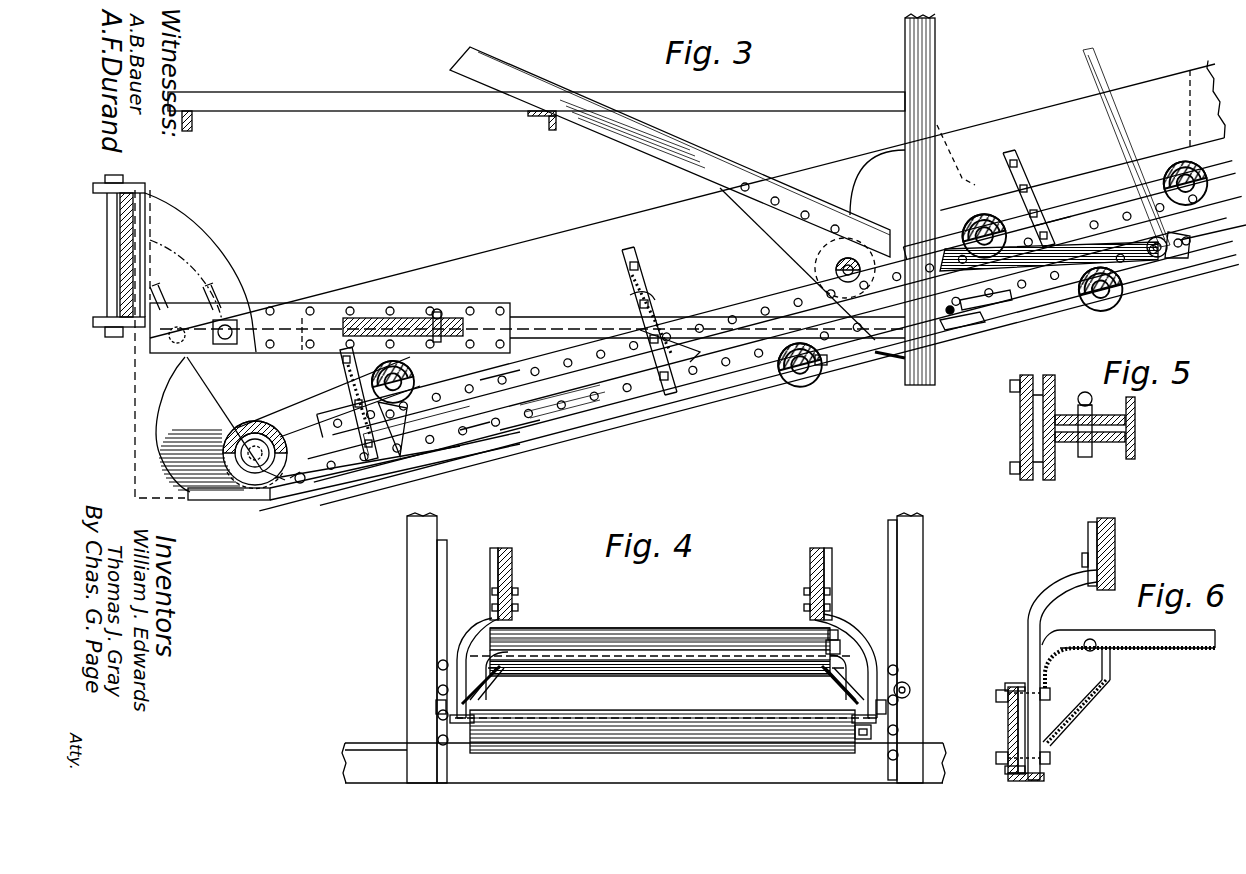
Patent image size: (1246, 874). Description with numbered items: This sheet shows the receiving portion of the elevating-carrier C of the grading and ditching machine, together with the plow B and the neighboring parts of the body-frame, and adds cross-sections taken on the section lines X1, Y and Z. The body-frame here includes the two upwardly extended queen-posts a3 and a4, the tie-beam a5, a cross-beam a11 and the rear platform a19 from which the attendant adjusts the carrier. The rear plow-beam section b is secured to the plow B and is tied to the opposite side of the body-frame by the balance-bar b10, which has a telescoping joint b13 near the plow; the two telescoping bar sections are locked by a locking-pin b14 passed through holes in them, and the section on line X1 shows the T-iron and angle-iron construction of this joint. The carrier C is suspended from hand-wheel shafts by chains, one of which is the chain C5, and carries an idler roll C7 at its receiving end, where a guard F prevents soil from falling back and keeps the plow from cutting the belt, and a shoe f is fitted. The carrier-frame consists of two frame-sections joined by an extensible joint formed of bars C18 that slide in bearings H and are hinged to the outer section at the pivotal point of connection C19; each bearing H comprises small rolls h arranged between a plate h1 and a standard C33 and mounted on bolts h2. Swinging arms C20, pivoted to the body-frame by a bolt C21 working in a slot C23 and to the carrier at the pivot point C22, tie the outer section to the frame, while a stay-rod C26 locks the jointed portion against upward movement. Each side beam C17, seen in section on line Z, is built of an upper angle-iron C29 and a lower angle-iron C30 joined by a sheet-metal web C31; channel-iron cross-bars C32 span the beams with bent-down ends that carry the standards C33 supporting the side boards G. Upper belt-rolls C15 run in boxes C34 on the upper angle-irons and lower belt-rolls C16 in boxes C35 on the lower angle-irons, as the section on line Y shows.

In FIG. 4, the queen-post a3 is at (412, 590).
In FIG. 3, the queen-post a4 is at (937, 88).
In FIG. 4, the queen-post a4 is at (910, 552).
In FIG. 4, the tie-beam a5 is at (757, 760).
In FIG. 3, the cross-beam a11 is at (670, 193).
In FIG. 3, the platform a19 is at (812, 108).
In FIG. 3, the rear plow-beam section b is at (132, 248).
In FIG. 3, the balance-bar b10 is at (545, 314).
In FIG. 5, the balance-bar b10 is at (1140, 437).
In FIG. 3, the telescoping joint b13 is at (383, 318).
In FIG. 5, the telescoping joint b13 is at (1110, 408).
In FIG. 3, the locking-pin b14 is at (437, 313).
In FIG. 5, the locking-pin b14 is at (1087, 463).
In FIG. 3, the plow B is at (135, 428).
In FIG. 3, the elevating-carrier C is at (330, 410).
In FIG. 4, the elevating-carrier C is at (537, 625).
In FIG. 3, the chain C5 is at (895, 363).
In FIG. 3, the idler roll C7 is at (272, 448).
In FIG. 3, the upper belt-roll C15 is at (1185, 165).
In FIG. 4, the upper belt-roll C15 is at (702, 640).
In FIG. 3, the lower belt-roll C16 is at (800, 388).
In FIG. 4, the lower belt-roll C16 is at (587, 733).
In FIG. 3, the side beam C17 is at (1215, 235).
In FIG. 4, the side beam C17 is at (660, 685).
In FIG. 6, the side beam C17 is at (1077, 712).
In FIG. 3, the bar C18 is at (610, 377).
In FIG. 3, the pivotal point of connection C19 is at (973, 330).
In FIG. 3, the swinging arm C20 is at (1012, 318).
In FIG. 4, the swinging arm C20 is at (440, 710).
In FIG. 3, the pivot bolt C21 is at (830, 262).
In FIG. 3, the pivot point C22 is at (1153, 257).
In FIG. 3, the slot C23 is at (1066, 228).
In FIG. 3, the stay-rod C26 is at (1118, 123).
In FIG. 3, the upper angle-iron C29 is at (500, 377).
In FIG. 4, the upper angle-iron C29 is at (495, 667).
In FIG. 6, the upper angle-iron C29 is at (1113, 663).
In FIG. 3, the lower angle-iron C30 is at (528, 418).
In FIG. 4, the lower angle-iron C30 is at (457, 720).
In FIG. 6, the lower angle-iron C30 is at (1037, 783).
In FIG. 3, the sheet-metal web C31 is at (483, 430).
In FIG. 4, the sheet-metal web C31 is at (490, 683).
In FIG. 6, the sheet-metal web C31 is at (1103, 690).
In FIG. 4, the cross-bar C32 is at (597, 657).
In FIG. 6, the cross-bar C32 is at (1177, 638).
In FIG. 3, the standard C33 is at (650, 292).
In FIG. 4, the standard C33 is at (468, 624).
In FIG. 6, the standard C33 is at (1030, 600).
In FIG. 3, the box C34 is at (410, 380).
In FIG. 4, the box C34 is at (837, 643).
In FIG. 3, the box C35 is at (825, 370).
In FIG. 4, the box C35 is at (863, 750).
In FIG. 3, the guard F is at (163, 477).
In FIG. 3, the shoe f is at (220, 494).
In FIG. 3, the side board G is at (1012, 128).
In FIG. 4, the side board G is at (512, 576).
In FIG. 6, the side board G is at (1097, 542).
In FIG. 3, the bearing H is at (693, 363).
In FIG. 6, the bearing H is at (985, 733).
In FIG. 4, the small roll h is at (902, 690).
In FIG. 6, the small roll h is at (1010, 683).
In FIG. 6, the plate h1 is at (997, 690).
In FIG. 6, the bolt h2 is at (1037, 690).
In FIG. 3, the section line x' X1 is at (302, 315).
In FIG. 3, the section line y Y is at (1196, 62).
In FIG. 3, the section line z Z is at (625, 250).